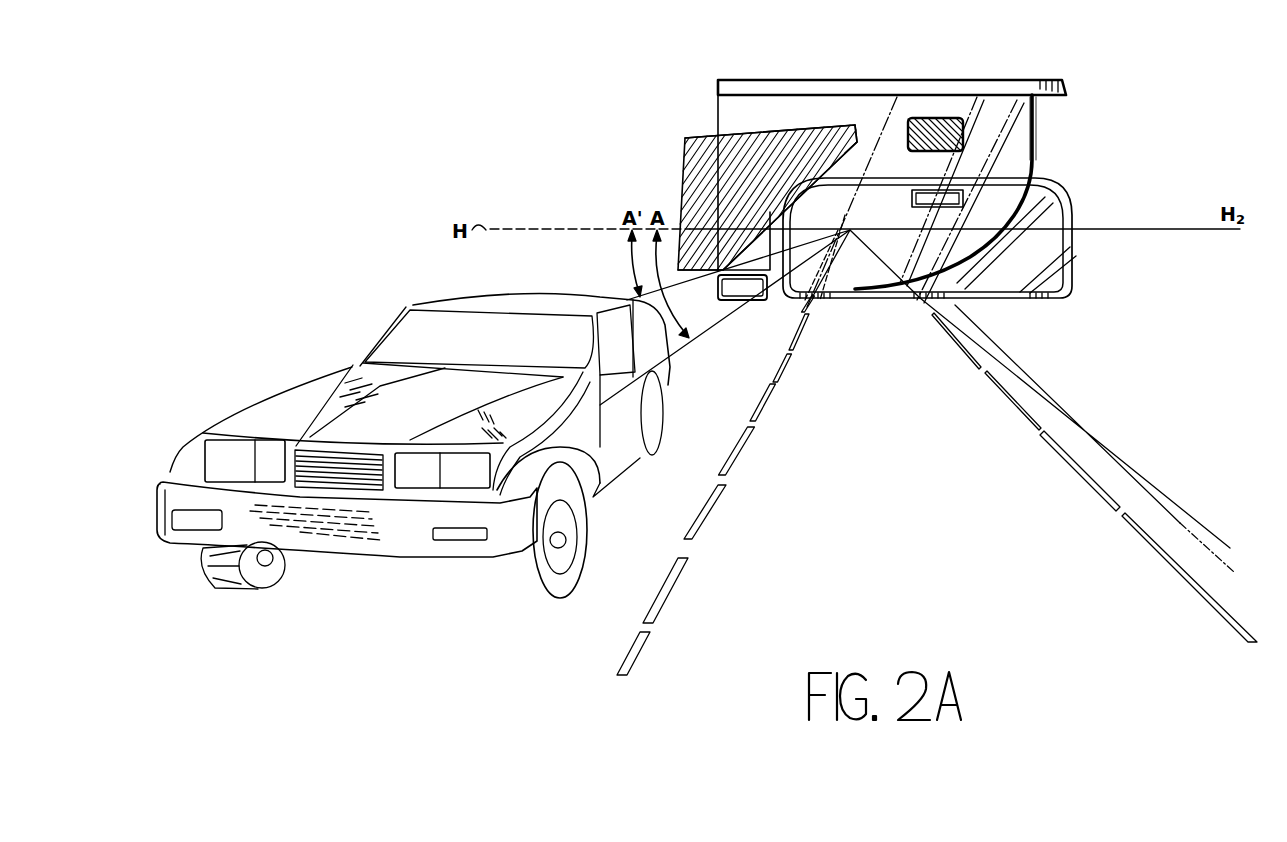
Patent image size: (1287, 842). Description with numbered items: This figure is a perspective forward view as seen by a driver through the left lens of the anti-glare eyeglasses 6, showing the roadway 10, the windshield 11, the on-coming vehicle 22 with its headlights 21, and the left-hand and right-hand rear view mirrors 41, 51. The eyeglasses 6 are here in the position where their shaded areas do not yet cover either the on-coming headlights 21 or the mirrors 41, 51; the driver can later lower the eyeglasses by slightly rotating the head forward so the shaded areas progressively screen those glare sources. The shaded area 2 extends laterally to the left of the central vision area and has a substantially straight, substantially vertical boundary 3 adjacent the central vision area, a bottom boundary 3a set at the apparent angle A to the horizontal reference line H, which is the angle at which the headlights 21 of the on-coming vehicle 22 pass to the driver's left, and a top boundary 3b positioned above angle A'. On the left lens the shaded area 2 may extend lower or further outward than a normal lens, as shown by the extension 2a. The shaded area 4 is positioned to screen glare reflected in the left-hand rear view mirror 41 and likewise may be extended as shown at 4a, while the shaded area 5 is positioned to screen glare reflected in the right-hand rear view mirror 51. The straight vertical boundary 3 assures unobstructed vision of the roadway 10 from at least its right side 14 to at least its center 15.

The shaded area 2 is at (813, 157).
The extended shaded area 2a is at (696, 157).
The boundary 3 is at (857, 138).
The bottom boundary 3a is at (825, 176).
The top boundary 3b is at (768, 153).
The shaded area 4 is at (762, 265).
The extended shaded area 4a is at (709, 247).
The left-hand rear view mirror 41 is at (746, 301).
The shaded area 5 is at (950, 126).
The right-hand rear view mirror 51 is at (958, 207).
The eyeglasses 6 is at (743, 79).
The roadway 10 is at (854, 262).
The windshield 11 is at (1043, 207).
The right side of the roadway 14 is at (883, 273).
The center of the roadway 15 is at (840, 276).
The headlights 21 is at (223, 453).
The on-coming vehicle 22 is at (413, 307).